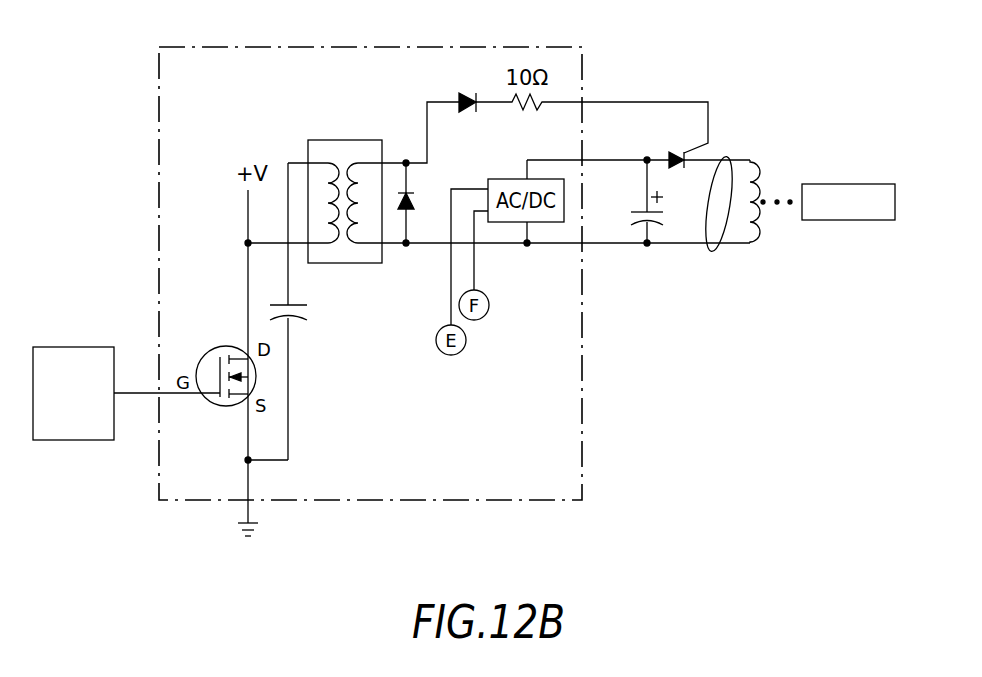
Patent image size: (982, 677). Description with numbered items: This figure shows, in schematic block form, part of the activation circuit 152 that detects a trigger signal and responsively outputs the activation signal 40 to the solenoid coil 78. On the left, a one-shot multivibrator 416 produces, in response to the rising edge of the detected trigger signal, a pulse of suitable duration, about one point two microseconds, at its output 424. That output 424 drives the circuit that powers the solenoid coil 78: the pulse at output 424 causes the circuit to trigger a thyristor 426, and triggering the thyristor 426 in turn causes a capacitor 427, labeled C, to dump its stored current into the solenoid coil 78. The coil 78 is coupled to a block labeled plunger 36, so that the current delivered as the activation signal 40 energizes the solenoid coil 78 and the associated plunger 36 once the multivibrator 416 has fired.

The activation circuit 152 is at (368, 543).
The one-shot multivibrator 416 is at (73, 440).
The output 424 is at (138, 392).
The thyristor 426 is at (672, 154).
The capacitor 427 is at (634, 211).
The activation signal 40 is at (723, 157).
The solenoid coil 78 is at (760, 222).
The plunger 36 is at (831, 184).